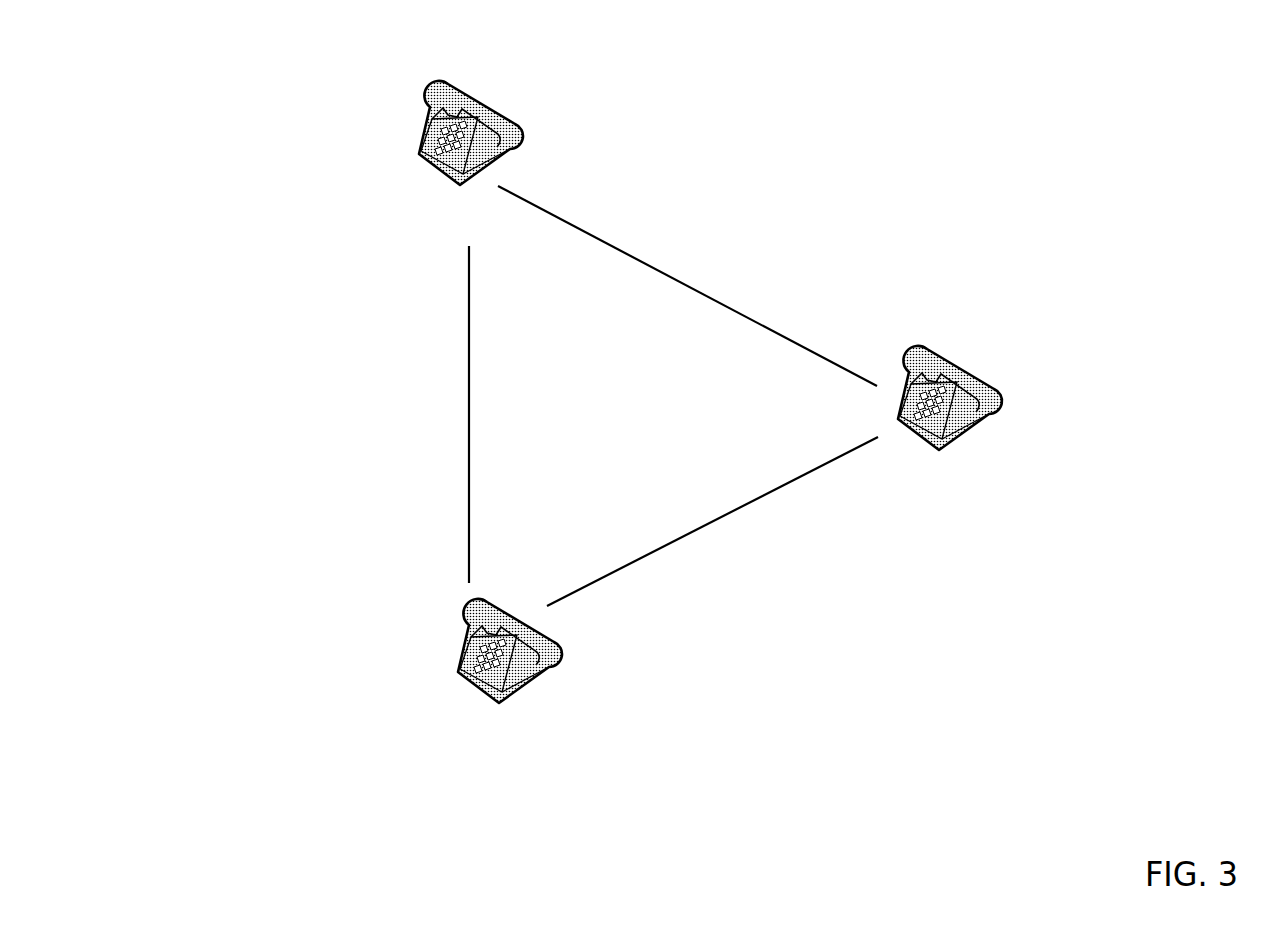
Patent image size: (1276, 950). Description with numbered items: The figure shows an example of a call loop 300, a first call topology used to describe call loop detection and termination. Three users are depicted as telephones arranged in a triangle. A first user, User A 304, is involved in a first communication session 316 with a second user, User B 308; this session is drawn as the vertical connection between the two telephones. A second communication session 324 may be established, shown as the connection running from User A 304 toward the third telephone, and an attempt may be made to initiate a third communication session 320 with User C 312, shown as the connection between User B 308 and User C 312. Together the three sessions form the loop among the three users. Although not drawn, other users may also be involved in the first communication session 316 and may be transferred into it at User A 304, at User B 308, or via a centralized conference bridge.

The call loop 300 is at (122, 113).
The User A 304 is at (522, 138).
The User B 308 is at (558, 662).
The User C 312 is at (1002, 403).
The first communication session 316 is at (470, 455).
The third communication session 320 is at (717, 515).
The second communication session 324 is at (705, 293).